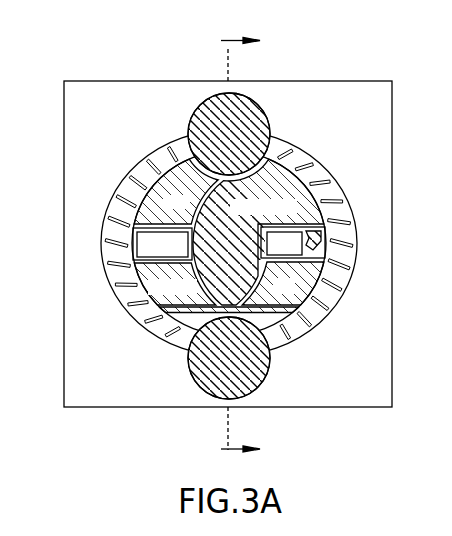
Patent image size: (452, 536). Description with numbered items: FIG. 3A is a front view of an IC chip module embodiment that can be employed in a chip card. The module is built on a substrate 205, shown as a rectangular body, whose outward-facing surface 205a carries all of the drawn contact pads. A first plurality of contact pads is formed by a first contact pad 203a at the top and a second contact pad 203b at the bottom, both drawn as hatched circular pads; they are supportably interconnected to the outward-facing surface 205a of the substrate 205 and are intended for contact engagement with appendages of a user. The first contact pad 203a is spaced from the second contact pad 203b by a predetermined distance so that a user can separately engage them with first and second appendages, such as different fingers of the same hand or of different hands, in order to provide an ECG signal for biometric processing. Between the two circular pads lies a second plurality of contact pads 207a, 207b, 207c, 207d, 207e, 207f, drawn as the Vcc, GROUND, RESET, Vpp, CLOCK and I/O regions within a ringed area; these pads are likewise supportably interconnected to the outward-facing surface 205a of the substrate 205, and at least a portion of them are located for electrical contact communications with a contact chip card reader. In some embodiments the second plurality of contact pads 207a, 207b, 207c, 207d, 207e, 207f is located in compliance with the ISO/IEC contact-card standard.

The substrate 205 is at (343, 81).
The outward-facing surface 205a is at (93, 97).
The first contact pad 203a is at (258, 116).
The second contact pad 203b is at (250, 377).
The contact pad of the second plurality 207a is at (151, 215).
The contact pad of the second plurality 207b is at (303, 213).
The contact pad of the second plurality 207c is at (133, 244).
The contact pad of the second plurality 207d is at (322, 247).
The contact pad of the second plurality 207e is at (140, 272).
The contact pad of the second plurality 207f is at (303, 277).